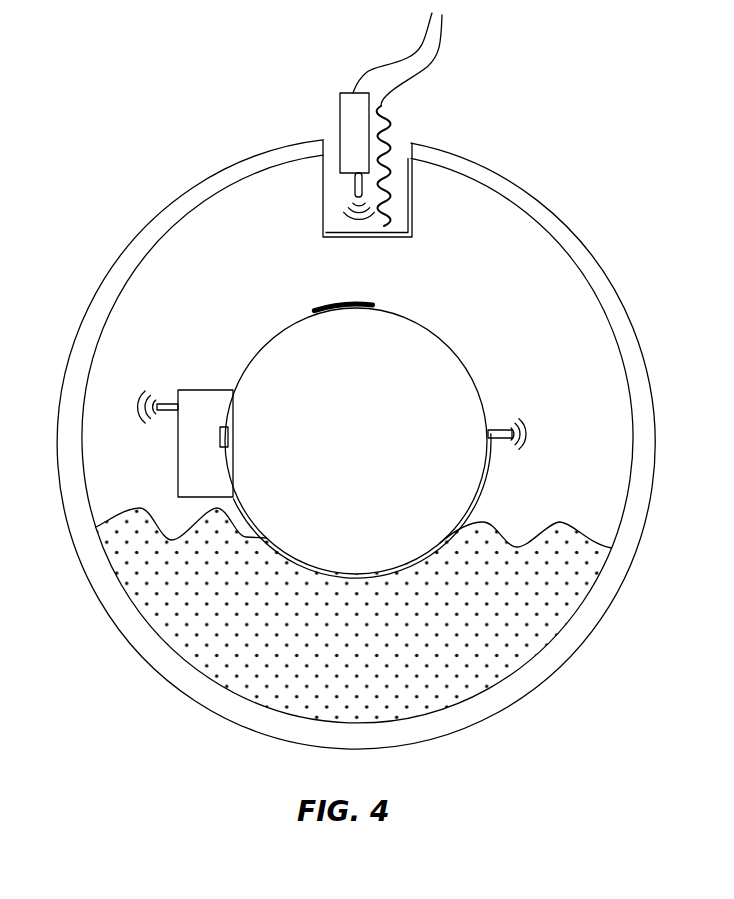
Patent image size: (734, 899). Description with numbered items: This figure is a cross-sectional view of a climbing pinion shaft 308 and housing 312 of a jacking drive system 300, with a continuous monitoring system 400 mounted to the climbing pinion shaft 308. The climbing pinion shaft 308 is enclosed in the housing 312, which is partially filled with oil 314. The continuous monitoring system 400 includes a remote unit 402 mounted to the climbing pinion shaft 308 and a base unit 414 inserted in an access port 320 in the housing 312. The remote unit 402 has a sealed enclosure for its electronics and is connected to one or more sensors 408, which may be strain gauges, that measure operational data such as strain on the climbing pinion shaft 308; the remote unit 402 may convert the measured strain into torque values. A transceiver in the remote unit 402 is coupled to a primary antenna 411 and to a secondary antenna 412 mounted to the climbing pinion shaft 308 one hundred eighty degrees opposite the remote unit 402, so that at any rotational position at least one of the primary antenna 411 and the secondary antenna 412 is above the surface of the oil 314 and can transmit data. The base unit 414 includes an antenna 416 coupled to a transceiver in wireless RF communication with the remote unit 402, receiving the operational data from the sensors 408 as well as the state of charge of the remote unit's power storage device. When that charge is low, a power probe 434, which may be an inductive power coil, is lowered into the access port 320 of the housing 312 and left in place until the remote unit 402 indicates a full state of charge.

The jacking drive system 300 is at (115, 218).
The housing 312 is at (620, 327).
The oil 314 is at (452, 623).
The climbing pinion shaft 308 is at (440, 488).
The sensors 408 is at (335, 307).
The remote unit 402 is at (217, 388).
The primary antenna 411 is at (125, 407).
The secondary antenna 412 is at (533, 434).
The continuous monitoring system 400 is at (229, 152).
The access port 320 is at (400, 188).
The base unit 414 is at (348, 120).
The antenna 416 is at (353, 196).
The power probe 434 is at (388, 110).